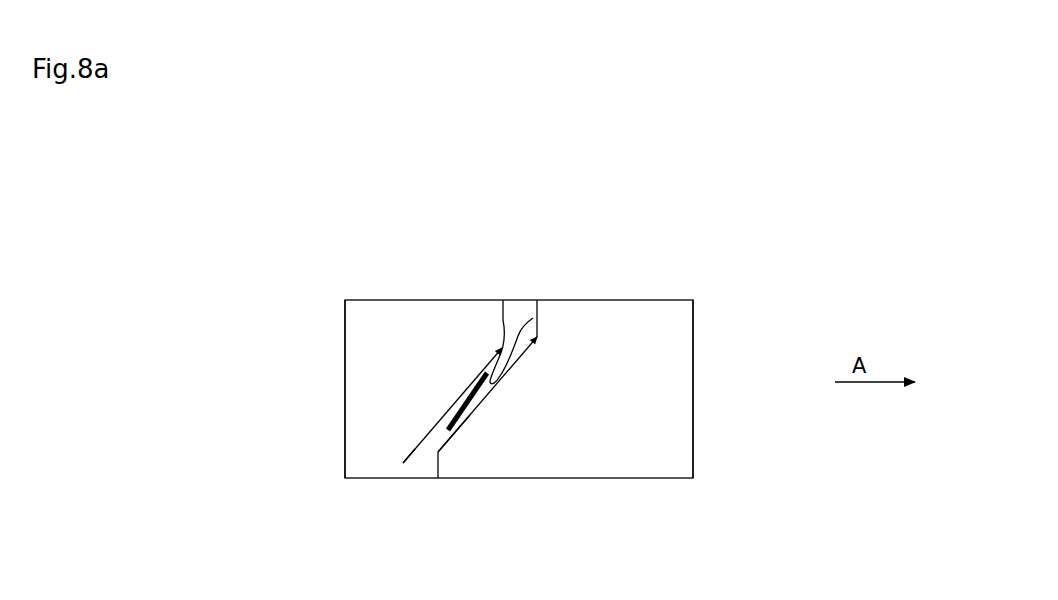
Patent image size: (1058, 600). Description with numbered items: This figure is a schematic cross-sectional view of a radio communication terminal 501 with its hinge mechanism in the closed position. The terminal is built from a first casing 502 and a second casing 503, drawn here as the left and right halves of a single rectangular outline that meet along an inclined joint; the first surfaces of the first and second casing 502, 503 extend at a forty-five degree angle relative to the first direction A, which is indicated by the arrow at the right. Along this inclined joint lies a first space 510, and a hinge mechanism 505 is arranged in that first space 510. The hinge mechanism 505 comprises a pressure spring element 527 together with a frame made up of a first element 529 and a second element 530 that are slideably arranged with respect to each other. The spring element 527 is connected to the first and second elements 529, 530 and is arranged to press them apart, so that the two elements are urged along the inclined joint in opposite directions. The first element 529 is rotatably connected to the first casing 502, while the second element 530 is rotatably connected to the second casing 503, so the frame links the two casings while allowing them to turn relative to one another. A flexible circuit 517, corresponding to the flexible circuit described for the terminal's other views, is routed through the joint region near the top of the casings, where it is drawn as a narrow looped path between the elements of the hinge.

The radio communication terminal 501 is at (738, 282).
The first casing 502 is at (365, 400).
The second casing 503 is at (658, 352).
The hinge mechanism 505 is at (457, 395).
The first space 510 is at (407, 462).
The flexible circuit 517 is at (523, 341).
The pressure spring element 527 is at (470, 408).
The first element 529 is at (495, 355).
The second element 530 is at (450, 450).